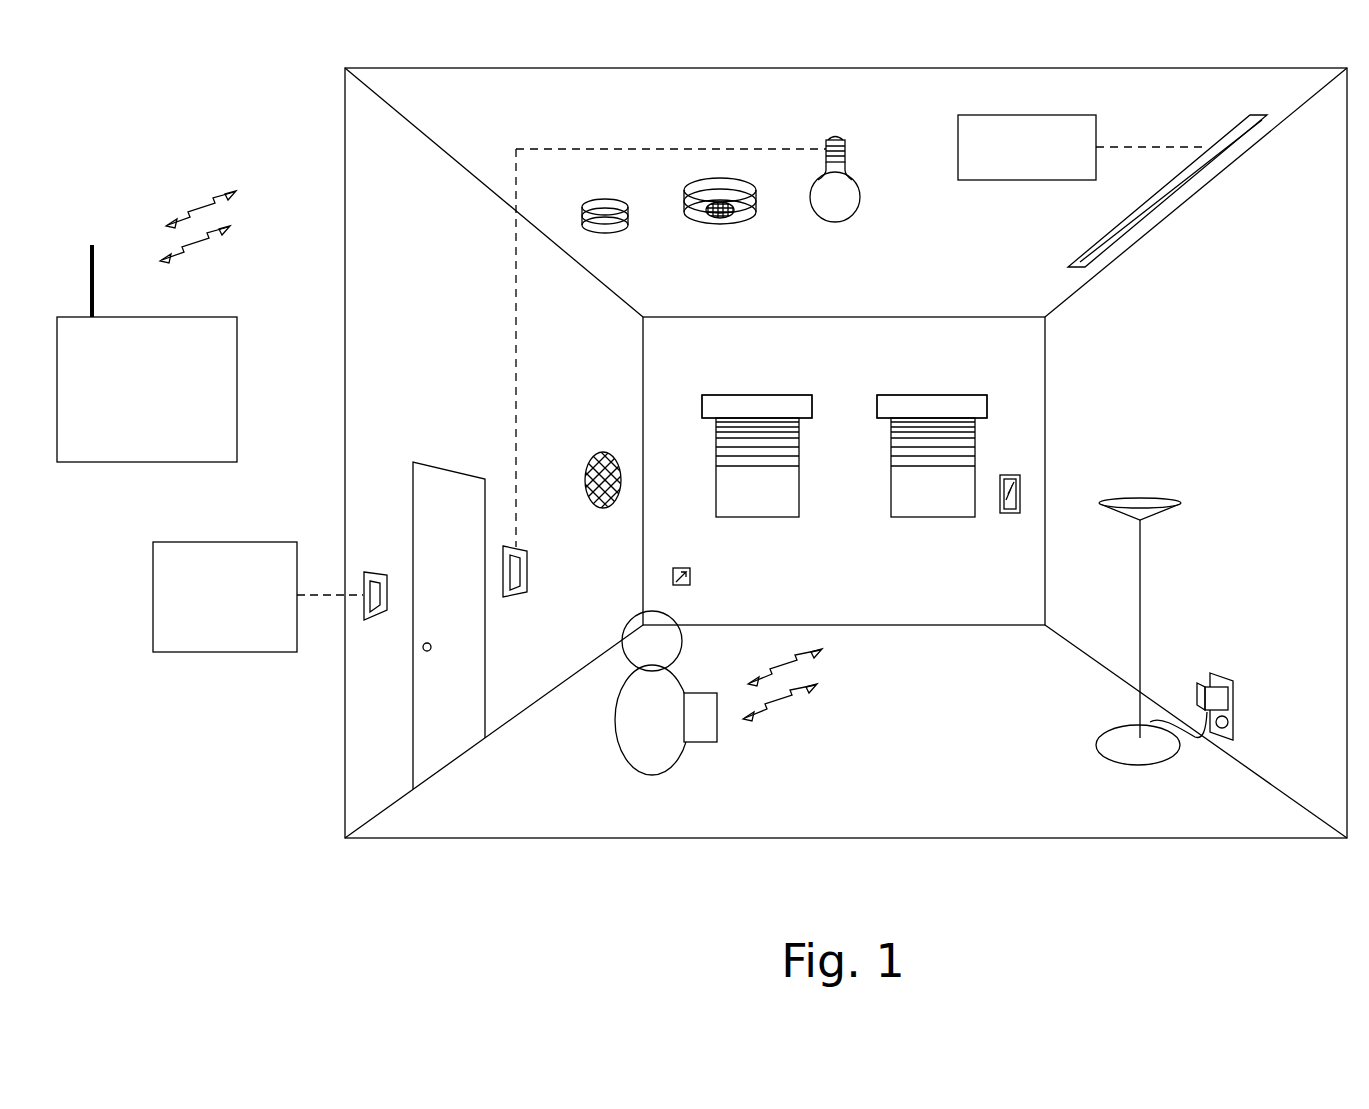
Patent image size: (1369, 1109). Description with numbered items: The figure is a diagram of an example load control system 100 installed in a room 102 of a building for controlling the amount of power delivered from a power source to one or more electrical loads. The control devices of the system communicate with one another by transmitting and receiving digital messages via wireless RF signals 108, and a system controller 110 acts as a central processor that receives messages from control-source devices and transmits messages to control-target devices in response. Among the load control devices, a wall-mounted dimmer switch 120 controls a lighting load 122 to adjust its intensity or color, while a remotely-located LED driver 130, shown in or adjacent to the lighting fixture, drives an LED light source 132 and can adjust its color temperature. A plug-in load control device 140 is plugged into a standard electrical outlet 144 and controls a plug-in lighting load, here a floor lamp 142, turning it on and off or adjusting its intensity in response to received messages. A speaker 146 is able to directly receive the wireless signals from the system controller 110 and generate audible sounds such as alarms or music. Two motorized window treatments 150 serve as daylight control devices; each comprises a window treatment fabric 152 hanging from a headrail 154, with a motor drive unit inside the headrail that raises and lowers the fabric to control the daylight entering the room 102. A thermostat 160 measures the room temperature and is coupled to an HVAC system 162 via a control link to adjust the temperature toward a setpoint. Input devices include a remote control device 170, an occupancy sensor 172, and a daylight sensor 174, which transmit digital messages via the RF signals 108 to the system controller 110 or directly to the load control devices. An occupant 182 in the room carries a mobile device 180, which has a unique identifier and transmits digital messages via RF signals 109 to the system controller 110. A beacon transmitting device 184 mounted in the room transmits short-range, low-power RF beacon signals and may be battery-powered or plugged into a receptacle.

The load control system 100 is at (373, 885).
The room 102 is at (936, 743).
The RF signals 108 is at (185, 182).
The RF signals 109 is at (838, 697).
The system controller 110 is at (93, 435).
The dimmer switch 120 is at (528, 575).
The lighting load 122 is at (833, 196).
The LED driver 130 is at (983, 172).
The LED light source 132 is at (1093, 245).
The plug-in load control device 140 is at (1223, 692).
The floor lamp 142 is at (1140, 500).
The electrical outlet 144 is at (1235, 717).
The speaker 146 is at (605, 453).
The motorized window treatment 150 is at (810, 410).
The window treatment fabric 152 is at (716, 447).
The headrail 154 is at (722, 395).
The thermostat 160 is at (367, 568).
The HVAC system 162 is at (240, 638).
The remote control device 170 is at (1018, 475).
The occupancy sensor 172 is at (745, 208).
The daylight sensor 174 is at (605, 227).
The mobile device 180 is at (708, 708).
The occupant 182 is at (638, 740).
The beacon transmitting device 184 is at (683, 570).